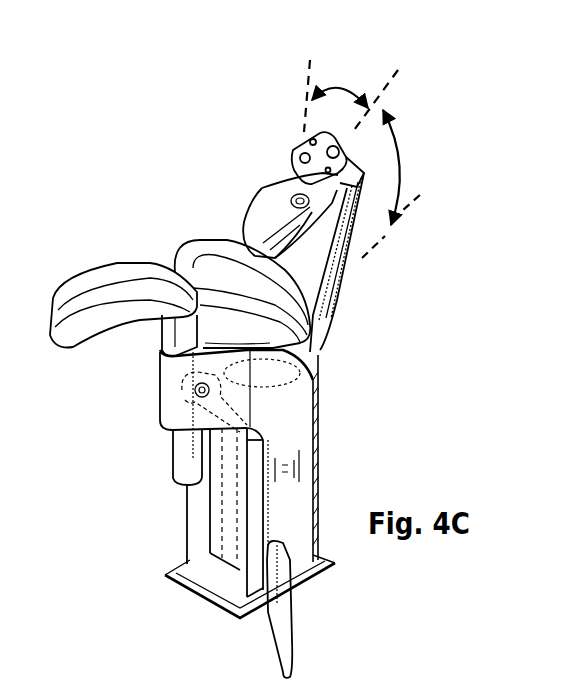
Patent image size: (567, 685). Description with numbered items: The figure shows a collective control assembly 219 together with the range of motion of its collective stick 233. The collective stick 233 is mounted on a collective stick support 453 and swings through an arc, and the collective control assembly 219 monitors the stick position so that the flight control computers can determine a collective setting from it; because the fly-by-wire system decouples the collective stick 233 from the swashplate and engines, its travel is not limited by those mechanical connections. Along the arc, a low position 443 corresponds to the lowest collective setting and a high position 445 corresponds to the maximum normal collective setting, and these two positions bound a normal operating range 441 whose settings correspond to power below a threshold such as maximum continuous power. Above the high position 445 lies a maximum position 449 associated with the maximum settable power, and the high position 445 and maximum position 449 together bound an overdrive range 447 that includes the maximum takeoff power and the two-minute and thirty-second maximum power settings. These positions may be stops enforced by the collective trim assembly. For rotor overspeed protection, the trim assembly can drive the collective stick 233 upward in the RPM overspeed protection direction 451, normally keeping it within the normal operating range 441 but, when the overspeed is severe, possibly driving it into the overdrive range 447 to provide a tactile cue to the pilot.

The collective control assembly 219 is at (146, 142).
The collective stick 233 is at (263, 193).
The normal operating range 441 is at (400, 211).
The low position 443 is at (383, 238).
The high position 445 is at (388, 90).
The overdrive range 447 is at (334, 92).
The maximum position 449 is at (308, 80).
The RPM overspeed protection direction 451 is at (405, 200).
The collective stick support 453 is at (332, 300).